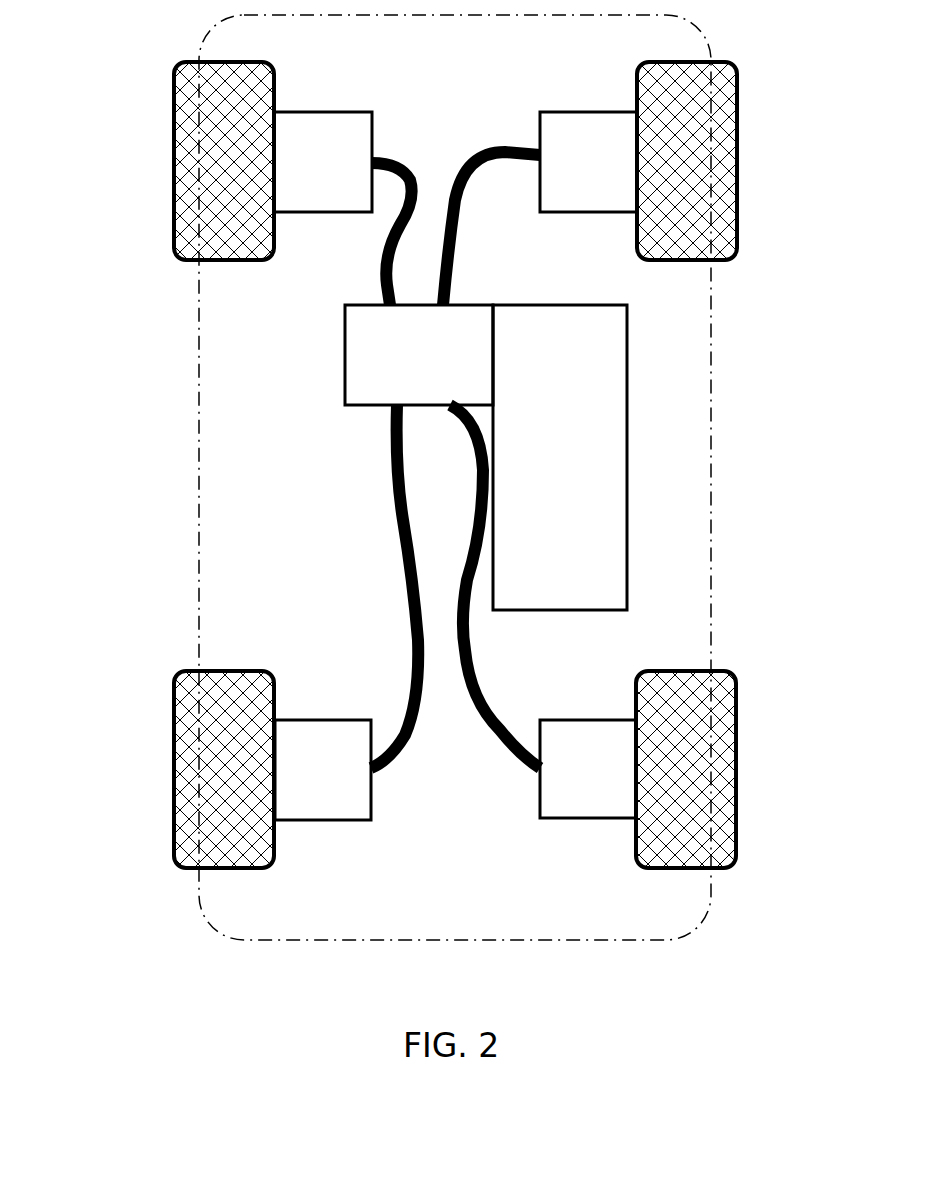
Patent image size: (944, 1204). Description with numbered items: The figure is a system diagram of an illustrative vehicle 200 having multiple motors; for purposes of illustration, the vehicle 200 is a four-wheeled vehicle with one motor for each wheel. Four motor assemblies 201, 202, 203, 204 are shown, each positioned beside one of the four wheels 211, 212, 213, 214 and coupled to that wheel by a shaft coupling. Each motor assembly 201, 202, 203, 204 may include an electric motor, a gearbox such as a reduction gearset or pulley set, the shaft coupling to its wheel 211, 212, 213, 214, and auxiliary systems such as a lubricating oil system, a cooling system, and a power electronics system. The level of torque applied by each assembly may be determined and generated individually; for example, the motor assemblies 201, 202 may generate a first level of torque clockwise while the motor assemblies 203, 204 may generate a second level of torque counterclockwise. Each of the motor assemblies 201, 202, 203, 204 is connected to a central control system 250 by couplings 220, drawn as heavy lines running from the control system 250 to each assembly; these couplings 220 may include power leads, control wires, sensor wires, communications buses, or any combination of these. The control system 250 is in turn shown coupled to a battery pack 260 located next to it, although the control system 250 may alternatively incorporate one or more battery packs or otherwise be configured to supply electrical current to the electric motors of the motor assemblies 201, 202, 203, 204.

The vehicle 200 is at (468, 78).
The motor assembly 201 is at (296, 178).
The motor assembly 202 is at (561, 178).
The motor assembly 203 is at (295, 785).
The motor assembly 204 is at (561, 786).
The wheel 211 is at (173, 167).
The wheel 212 is at (737, 160).
The wheel 213 is at (173, 799).
The wheel 214 is at (736, 768).
The couplings 220 is at (489, 702).
The control system 250 is at (391, 372).
The battery pack 260 is at (538, 467).